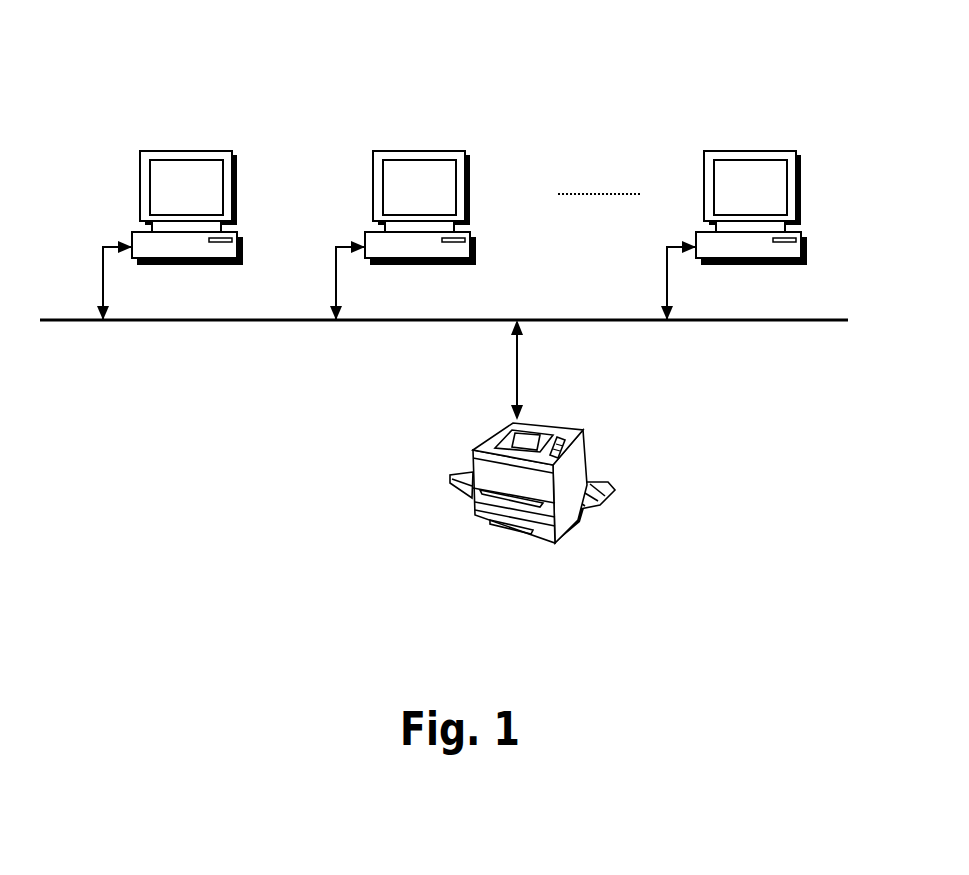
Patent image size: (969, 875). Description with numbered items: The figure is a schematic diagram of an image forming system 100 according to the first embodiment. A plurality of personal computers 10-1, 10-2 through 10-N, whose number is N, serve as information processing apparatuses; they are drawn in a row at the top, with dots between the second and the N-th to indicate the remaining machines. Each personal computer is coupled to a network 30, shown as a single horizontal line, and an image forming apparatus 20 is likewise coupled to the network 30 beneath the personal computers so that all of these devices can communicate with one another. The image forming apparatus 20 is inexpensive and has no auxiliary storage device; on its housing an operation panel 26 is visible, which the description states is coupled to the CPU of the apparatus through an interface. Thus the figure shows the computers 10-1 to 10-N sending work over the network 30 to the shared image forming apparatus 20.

The image forming system 100 is at (552, 104).
The personal computer 10-1 is at (239, 231).
The personal computer 10-2 is at (472, 232).
The personal computer 10-N is at (705, 231).
The network 30 is at (387, 322).
The image forming apparatus 20 is at (533, 431).
The operation panel 26 is at (570, 438).